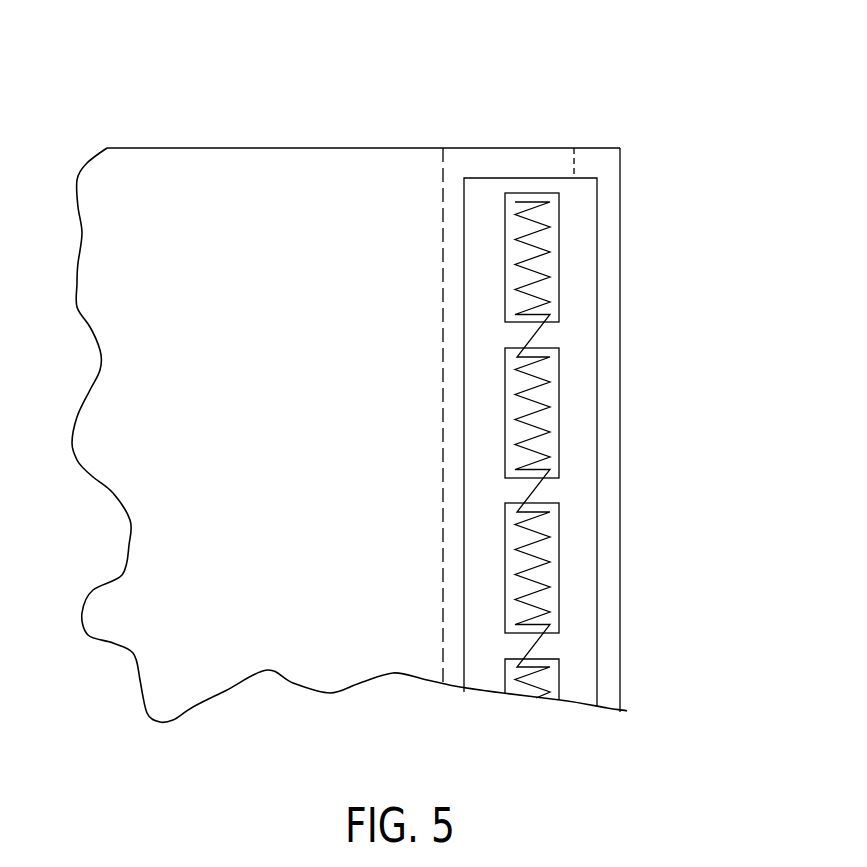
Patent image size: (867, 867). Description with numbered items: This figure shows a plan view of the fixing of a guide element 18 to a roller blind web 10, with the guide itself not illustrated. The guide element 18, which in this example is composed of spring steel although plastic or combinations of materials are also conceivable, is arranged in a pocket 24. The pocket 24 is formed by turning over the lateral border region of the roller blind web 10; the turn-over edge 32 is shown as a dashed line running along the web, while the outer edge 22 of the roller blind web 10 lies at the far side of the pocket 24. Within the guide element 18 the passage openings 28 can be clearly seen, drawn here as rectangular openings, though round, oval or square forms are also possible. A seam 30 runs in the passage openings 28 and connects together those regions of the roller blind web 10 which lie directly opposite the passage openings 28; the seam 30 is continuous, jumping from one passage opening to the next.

The roller blind web 10 is at (225, 148).
The guide element 18 is at (600, 232).
The outer edge 22 is at (574, 157).
The pocket 24 is at (633, 127).
The passage openings 28 is at (550, 279).
The seam 30 is at (530, 200).
The turn-over edge 32 is at (442, 250).